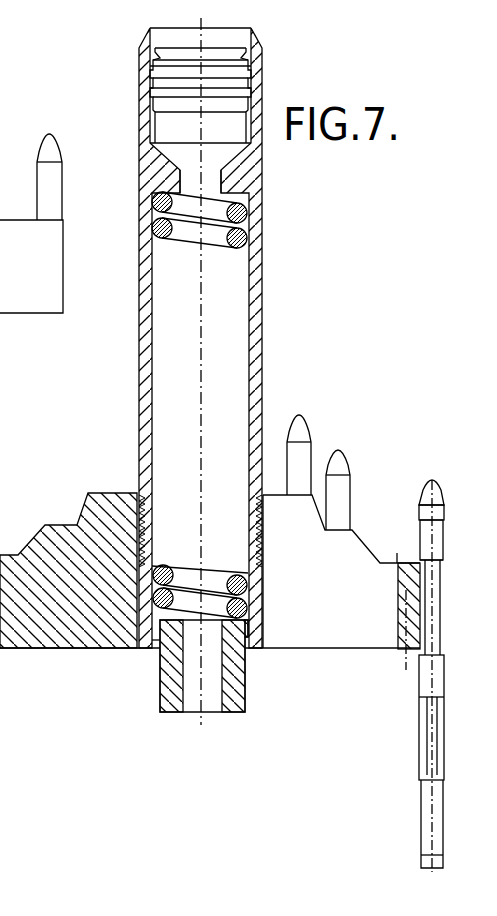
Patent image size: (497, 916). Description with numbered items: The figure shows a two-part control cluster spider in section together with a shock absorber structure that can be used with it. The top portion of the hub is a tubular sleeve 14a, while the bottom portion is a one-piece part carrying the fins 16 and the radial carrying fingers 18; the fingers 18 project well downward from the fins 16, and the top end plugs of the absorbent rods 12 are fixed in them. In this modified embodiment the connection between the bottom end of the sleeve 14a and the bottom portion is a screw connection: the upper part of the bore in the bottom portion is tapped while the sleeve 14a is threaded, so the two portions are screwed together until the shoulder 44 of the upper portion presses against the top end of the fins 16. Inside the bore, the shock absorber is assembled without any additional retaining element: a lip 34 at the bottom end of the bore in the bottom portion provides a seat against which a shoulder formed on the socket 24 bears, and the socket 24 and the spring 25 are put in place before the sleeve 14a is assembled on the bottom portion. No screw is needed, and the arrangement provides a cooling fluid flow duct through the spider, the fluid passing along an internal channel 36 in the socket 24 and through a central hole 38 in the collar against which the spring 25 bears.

The absorbent rod 12 is at (420, 812).
The sleeve 14a is at (262, 318).
The fin 16 is at (48, 565).
The radial carrying finger 18 is at (340, 485).
The socket 24 is at (240, 697).
The spring 25 is at (242, 216).
The lip 34 is at (140, 650).
The internal channel 36 is at (188, 697).
The central hole 38 is at (178, 172).
The shoulder 44 is at (137, 500).